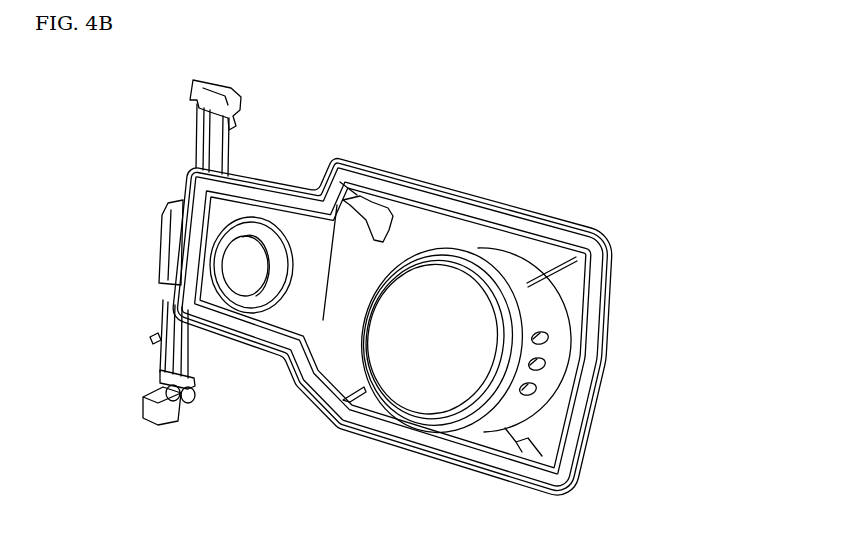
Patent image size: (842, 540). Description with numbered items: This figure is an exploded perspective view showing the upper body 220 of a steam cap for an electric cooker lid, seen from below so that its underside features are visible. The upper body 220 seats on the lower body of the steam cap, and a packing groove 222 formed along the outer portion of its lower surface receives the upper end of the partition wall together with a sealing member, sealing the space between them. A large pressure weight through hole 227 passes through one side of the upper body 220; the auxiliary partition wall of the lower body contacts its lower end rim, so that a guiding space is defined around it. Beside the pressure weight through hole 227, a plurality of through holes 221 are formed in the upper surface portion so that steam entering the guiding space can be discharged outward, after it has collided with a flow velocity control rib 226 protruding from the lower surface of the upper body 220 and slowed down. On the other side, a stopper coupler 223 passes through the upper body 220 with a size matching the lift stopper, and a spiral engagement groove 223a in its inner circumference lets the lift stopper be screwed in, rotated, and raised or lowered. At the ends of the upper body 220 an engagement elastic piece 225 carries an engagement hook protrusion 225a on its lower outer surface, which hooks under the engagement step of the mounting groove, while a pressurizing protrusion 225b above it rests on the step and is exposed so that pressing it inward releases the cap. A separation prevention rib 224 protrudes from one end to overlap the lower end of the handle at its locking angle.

The upper body 220 is at (84, 95).
The through holes 221 is at (543, 386).
The packing groove 222 is at (178, 300).
The stopper coupler 223 is at (228, 235).
The spiral engagement groove 223a is at (250, 240).
The separation prevention rib 224 is at (160, 243).
The engagement elastic piece 225 is at (162, 378).
The engagement hook protrusion 225a is at (193, 402).
The pressurizing protrusion 225b is at (172, 422).
The flow velocity control rib 226 is at (378, 208).
The pressure weight through hole 227 is at (450, 310).